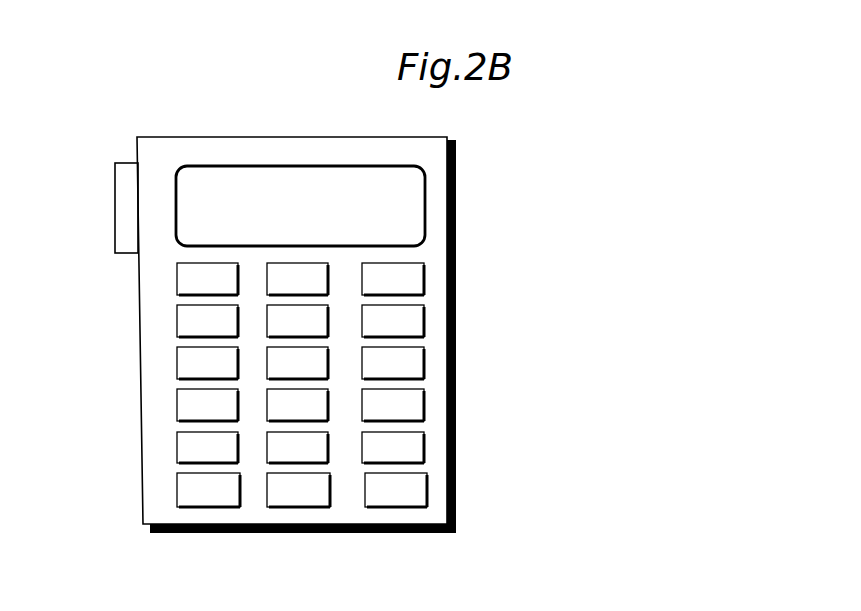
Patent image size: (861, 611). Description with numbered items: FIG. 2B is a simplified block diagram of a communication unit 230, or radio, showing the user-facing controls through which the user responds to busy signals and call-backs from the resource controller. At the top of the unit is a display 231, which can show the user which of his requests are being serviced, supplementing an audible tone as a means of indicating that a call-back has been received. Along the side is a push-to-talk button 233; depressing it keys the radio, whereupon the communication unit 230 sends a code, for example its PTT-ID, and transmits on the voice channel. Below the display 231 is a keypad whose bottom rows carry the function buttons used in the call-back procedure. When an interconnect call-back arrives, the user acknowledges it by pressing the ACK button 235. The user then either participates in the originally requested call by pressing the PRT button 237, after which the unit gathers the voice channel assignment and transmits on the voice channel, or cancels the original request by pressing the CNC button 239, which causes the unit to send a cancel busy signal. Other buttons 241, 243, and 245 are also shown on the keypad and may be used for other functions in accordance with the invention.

The communication unit 230 is at (316, 106).
The display 231 is at (407, 202).
The push-to-talk button 233 is at (125, 162).
The ACK button 235 is at (213, 507).
The PRT button 237 is at (303, 507).
The CNC button 239 is at (397, 507).
The button 241 is at (177, 448).
The button 243 is at (333, 460).
The button 245 is at (427, 455).